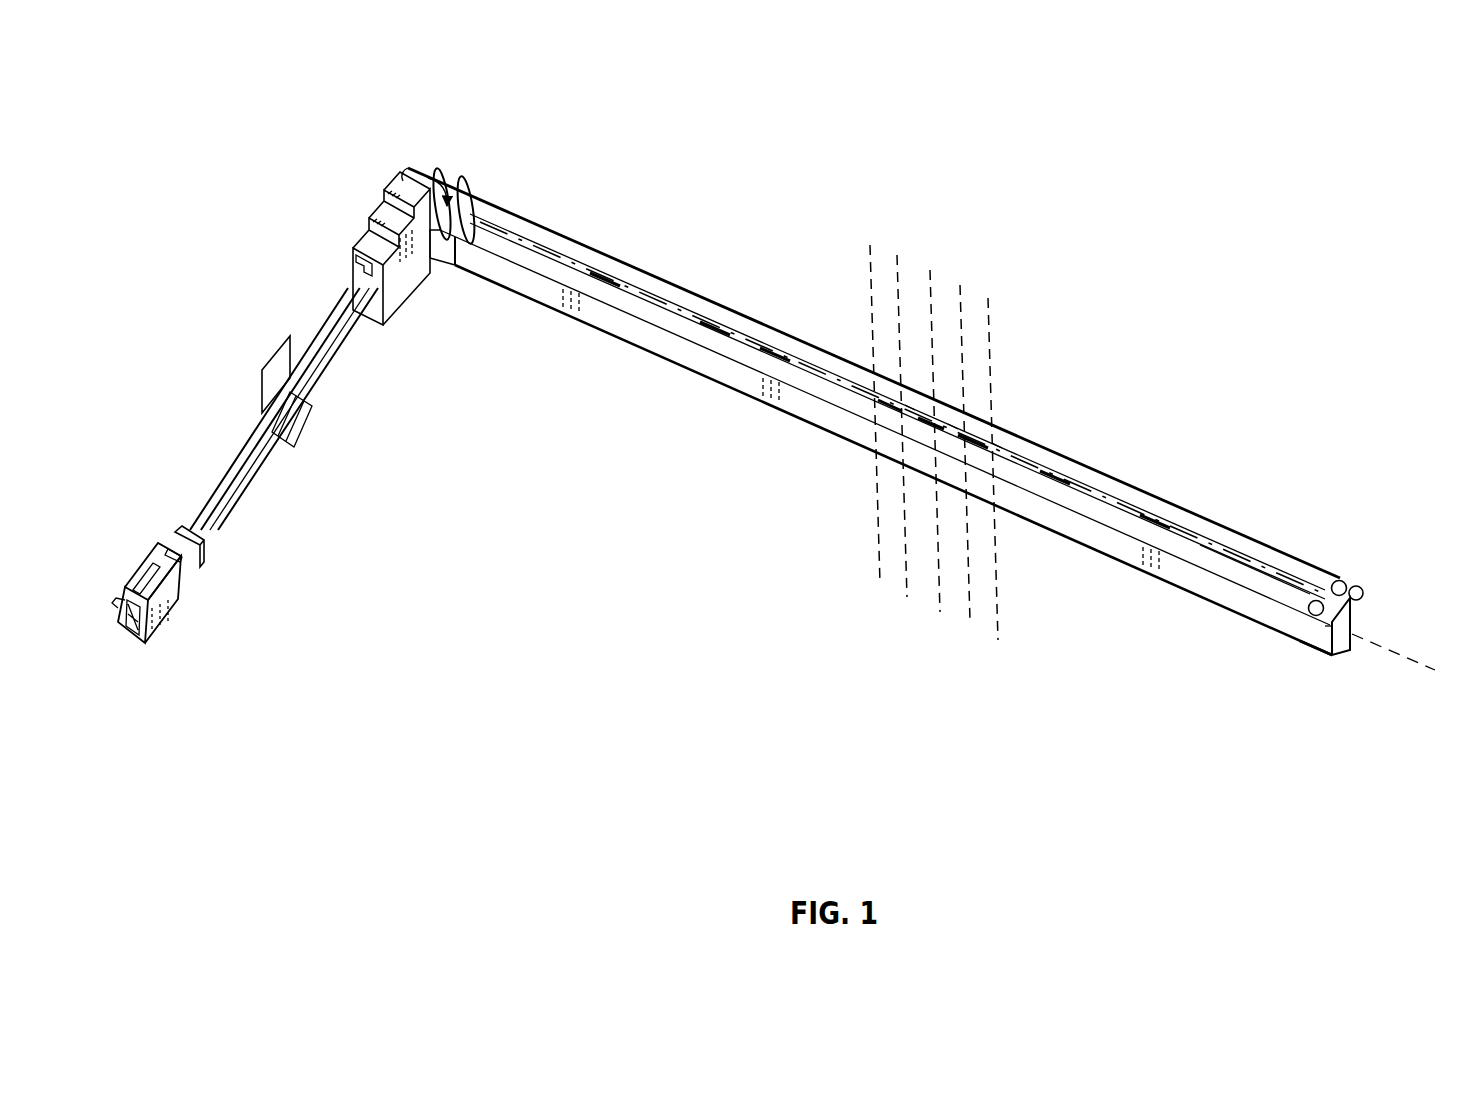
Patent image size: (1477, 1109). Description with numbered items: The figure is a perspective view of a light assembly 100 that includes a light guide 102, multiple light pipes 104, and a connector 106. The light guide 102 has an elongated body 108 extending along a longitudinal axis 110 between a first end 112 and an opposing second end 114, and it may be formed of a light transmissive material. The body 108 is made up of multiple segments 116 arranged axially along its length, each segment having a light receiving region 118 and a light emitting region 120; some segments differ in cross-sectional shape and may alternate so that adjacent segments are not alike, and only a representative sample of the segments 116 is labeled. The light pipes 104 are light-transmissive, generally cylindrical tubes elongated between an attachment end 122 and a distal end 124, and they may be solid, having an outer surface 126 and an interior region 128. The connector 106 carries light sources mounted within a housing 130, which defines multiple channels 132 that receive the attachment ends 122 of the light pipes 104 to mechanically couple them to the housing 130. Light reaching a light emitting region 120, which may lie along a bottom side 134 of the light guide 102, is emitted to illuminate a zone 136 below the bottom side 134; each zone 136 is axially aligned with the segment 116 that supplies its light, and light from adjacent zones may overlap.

The light assembly 100 is at (418, 112).
The light guide 102 is at (730, 397).
The light pipes 104 is at (610, 297).
The connector 106 is at (388, 208).
The elongated body 108 is at (743, 387).
The longitudinal axis 110 is at (1417, 663).
The first end 112 is at (440, 262).
The second end 114 is at (1347, 625).
The segments 116 is at (995, 260).
The light receiving region 118 is at (882, 407).
The light emitting region 120 is at (887, 467).
The attachment end 122 is at (470, 203).
The distal end 124 is at (1340, 582).
The outer surface 126 is at (1247, 590).
The interior region 128 is at (1313, 623).
The housing 130 is at (362, 243).
The channels 132 is at (412, 176).
The bottom side 134 is at (1345, 657).
The zone 136 is at (893, 590).